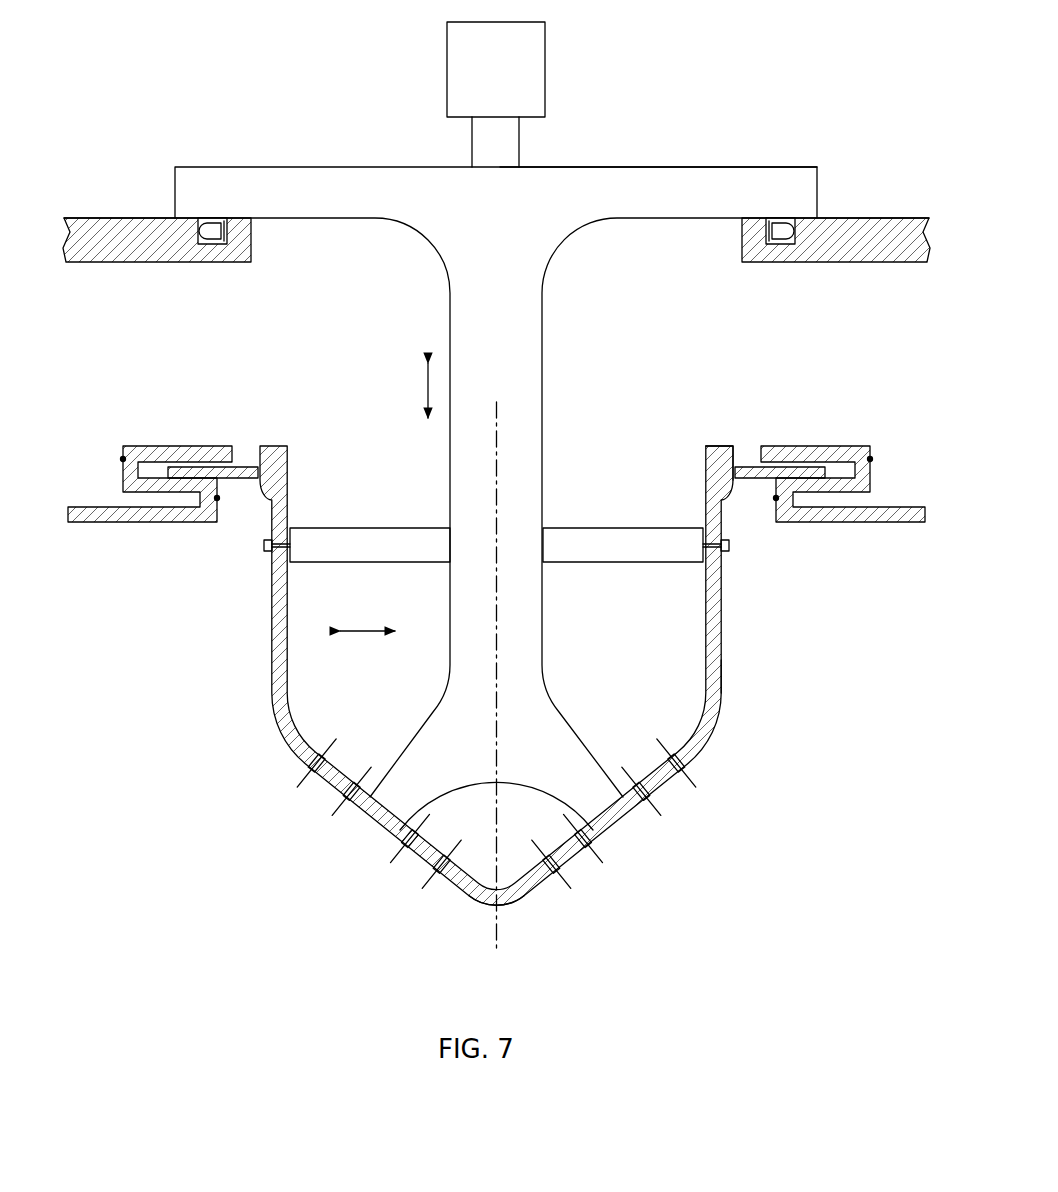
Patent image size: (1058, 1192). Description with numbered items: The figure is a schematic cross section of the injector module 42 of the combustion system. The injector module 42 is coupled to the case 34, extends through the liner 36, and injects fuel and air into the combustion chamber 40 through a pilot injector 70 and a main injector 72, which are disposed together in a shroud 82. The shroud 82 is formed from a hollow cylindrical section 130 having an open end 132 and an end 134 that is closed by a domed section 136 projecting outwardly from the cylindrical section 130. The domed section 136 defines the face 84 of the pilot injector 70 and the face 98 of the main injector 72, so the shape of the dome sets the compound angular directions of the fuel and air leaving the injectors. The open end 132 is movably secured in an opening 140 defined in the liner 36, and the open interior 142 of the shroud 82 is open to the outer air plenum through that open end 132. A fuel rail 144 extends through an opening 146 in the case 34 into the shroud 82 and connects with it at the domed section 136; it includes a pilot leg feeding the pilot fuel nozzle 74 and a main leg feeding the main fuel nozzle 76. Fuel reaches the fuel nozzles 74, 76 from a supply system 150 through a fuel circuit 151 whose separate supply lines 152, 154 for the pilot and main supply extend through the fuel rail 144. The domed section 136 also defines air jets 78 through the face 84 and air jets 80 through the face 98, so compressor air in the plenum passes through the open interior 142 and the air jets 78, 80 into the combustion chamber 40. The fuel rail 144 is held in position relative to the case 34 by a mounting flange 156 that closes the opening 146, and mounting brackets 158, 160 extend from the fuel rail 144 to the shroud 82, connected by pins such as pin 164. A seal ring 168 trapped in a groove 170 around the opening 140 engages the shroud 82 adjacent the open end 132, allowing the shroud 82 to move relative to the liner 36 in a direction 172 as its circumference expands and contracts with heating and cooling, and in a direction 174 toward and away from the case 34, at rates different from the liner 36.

The case 34 is at (703, 172).
The liner 36 is at (897, 507).
The combustion chamber 40 is at (716, 897).
The injector module 42 is at (762, 722).
The pilot injector 70 is at (292, 782).
The main injector 72 is at (720, 808).
The pilot fuel nozzle 74 is at (350, 810).
The main fuel nozzle 76 is at (612, 826).
The air jets 78 is at (436, 876).
The air jets 80 is at (686, 772).
The shroud 82 is at (722, 678).
The face 84 is at (400, 850).
The face 98 is at (657, 792).
The hollow cylindrical section 130 is at (722, 598).
The open end 132 is at (723, 446).
The end 134 is at (520, 900).
The domed section 136 is at (348, 778).
The opening 140 is at (218, 498).
The open interior 142 is at (642, 622).
The fuel rail 144 is at (543, 437).
The opening 146 is at (742, 242).
The supply system 150 is at (545, 80).
The fuel circuit 151 is at (596, 116).
The supply line 152 is at (470, 133).
The supply line 154 is at (521, 133).
The mounting flange 156 is at (270, 172).
The mounting bracket 158 is at (353, 530).
The mounting bracket 160 is at (622, 532).
The pin 164 is at (263, 548).
The seal ring 168 is at (238, 466).
The groove 170 is at (146, 460).
The direction 172 is at (366, 630).
The direction 174 is at (426, 390).